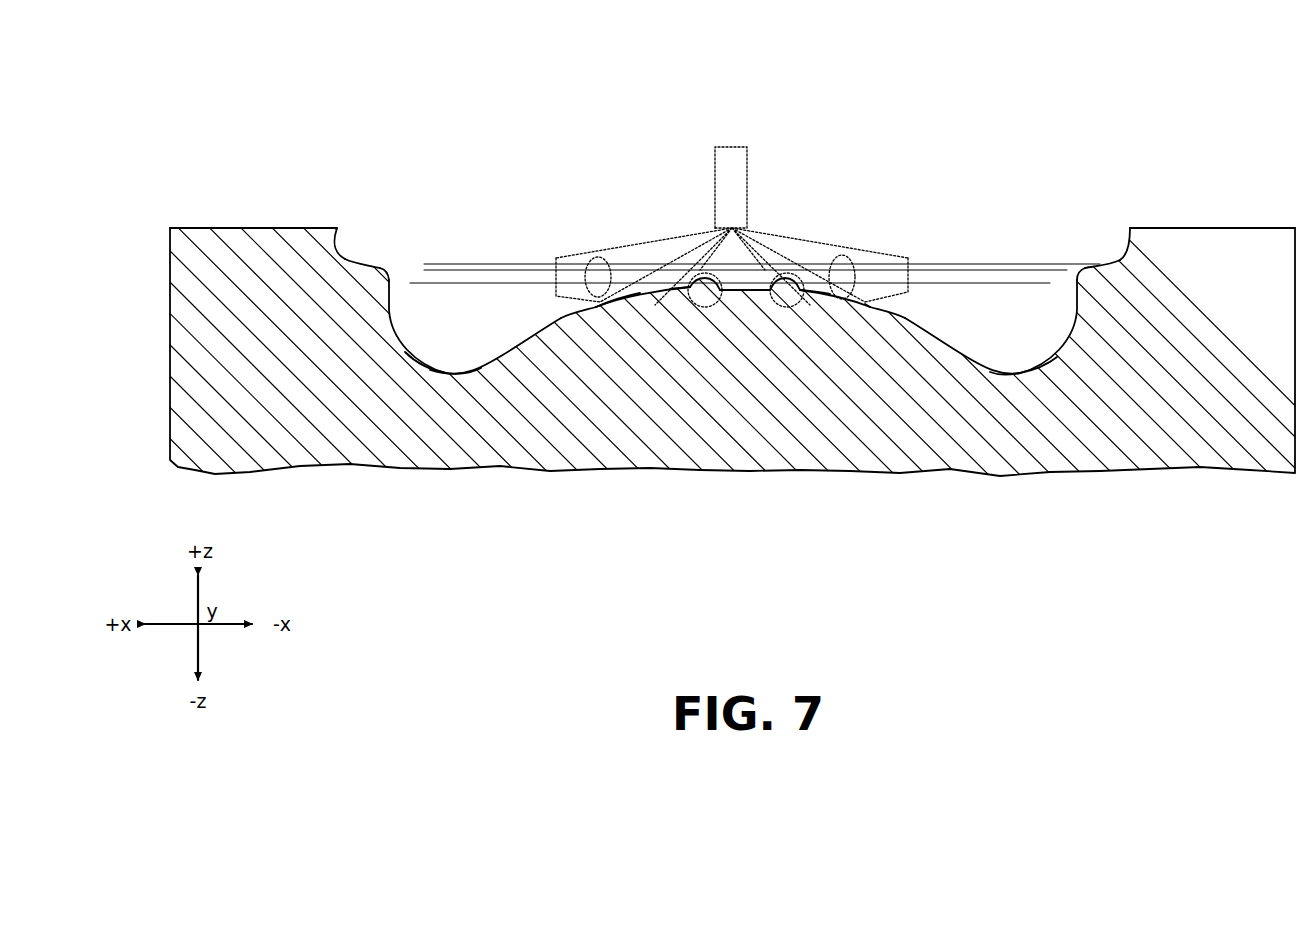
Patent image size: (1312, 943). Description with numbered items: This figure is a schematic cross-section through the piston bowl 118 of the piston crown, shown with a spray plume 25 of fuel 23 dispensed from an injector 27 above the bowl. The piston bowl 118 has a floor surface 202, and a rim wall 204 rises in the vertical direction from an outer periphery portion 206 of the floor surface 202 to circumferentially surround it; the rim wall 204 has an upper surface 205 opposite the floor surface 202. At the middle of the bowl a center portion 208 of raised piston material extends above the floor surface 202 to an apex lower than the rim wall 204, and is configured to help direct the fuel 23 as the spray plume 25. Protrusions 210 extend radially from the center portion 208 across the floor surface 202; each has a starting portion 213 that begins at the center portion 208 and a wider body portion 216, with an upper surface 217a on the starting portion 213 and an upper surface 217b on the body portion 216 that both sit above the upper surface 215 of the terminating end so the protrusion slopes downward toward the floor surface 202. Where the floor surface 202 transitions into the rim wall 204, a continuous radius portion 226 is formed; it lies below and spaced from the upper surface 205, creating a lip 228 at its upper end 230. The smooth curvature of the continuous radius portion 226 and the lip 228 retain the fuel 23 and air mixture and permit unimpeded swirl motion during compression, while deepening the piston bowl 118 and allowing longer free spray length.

The piston bowl 118 is at (185, 122).
The upper surface 205 is at (228, 228).
The rim wall 204 is at (337, 228).
The lip 228 is at (365, 265).
The upper end 230 is at (390, 272).
The floor surface 202 is at (460, 373).
The continuous radius portion 226 is at (424, 362).
The outer periphery portion 206 is at (442, 374).
The upper surface 215 is at (512, 348).
The upper surface 217b is at (570, 315).
The body portion 216 is at (590, 312).
The upper surface 217a is at (684, 234).
The center portion 208 is at (762, 297).
The starting portion 213 is at (718, 292).
The protrusions 210 is at (727, 112).
The injector 27 is at (730, 146).
The fuel 23 is at (778, 138).
The spray plume 25 is at (565, 262).